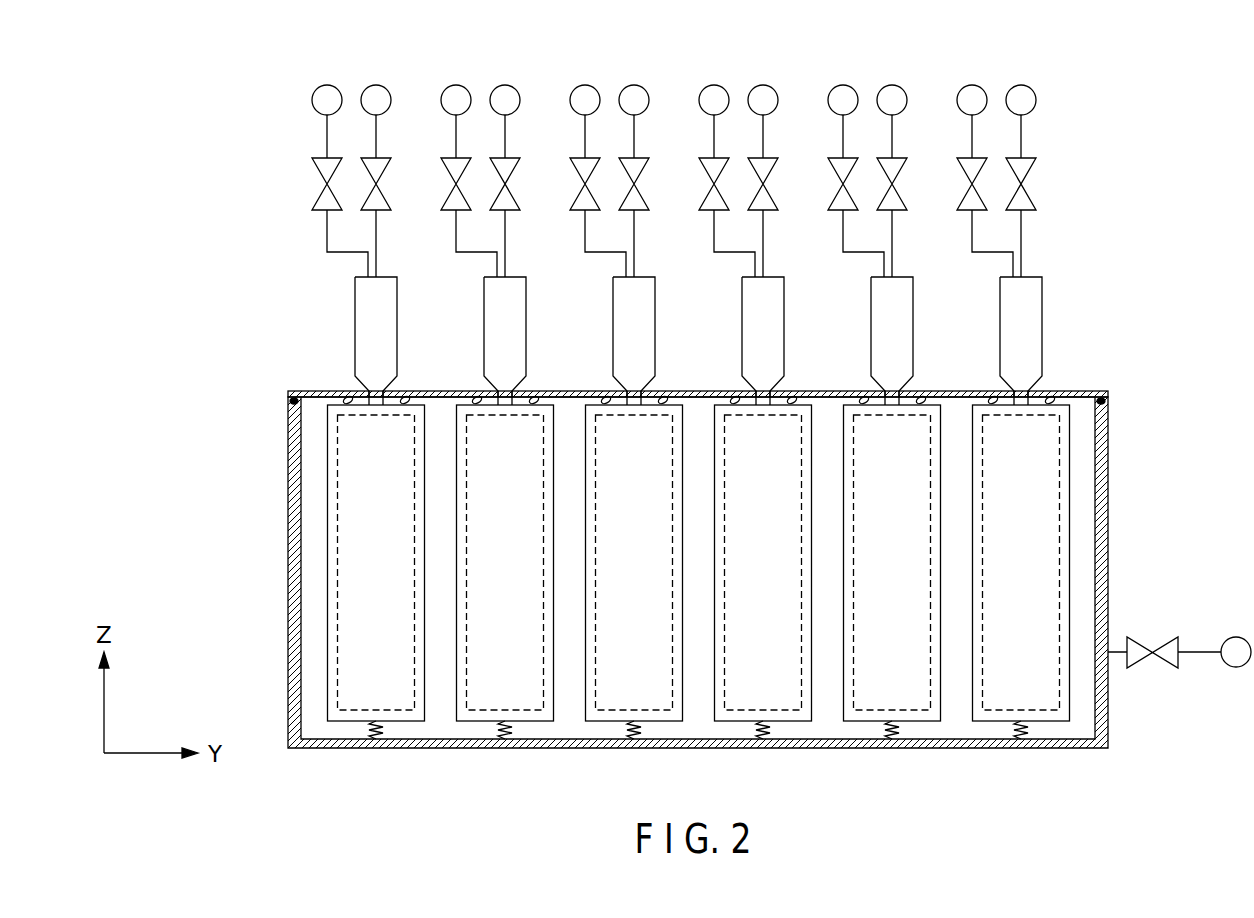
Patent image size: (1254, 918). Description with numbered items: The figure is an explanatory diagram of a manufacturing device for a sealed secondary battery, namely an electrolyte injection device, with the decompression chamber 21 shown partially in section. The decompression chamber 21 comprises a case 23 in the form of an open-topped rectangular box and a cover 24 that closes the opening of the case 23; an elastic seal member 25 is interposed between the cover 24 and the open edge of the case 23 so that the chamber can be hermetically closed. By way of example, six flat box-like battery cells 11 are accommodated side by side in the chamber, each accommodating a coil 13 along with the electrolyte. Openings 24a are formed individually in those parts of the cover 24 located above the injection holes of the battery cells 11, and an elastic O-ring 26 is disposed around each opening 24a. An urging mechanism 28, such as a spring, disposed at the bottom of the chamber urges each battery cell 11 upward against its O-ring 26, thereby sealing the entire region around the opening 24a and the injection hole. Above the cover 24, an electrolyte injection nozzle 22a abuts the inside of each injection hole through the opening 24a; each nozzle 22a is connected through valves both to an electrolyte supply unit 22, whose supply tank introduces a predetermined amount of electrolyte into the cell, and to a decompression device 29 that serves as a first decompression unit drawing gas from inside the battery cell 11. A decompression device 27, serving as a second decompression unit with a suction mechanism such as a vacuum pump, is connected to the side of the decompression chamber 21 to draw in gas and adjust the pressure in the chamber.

The battery cell 11 is at (425, 571).
The coil 13 is at (337, 503).
The decompression chamber 21 is at (654, 546).
The electrolyte supply unit 22 is at (330, 87).
The electrolyte injection nozzle 22a is at (360, 388).
The case 23 is at (649, 572).
The cover 24 is at (677, 377).
The opening 24a is at (388, 388).
The elastic seal member 25 is at (311, 391).
The O-ring 26 is at (410, 396).
The decompression device 27 is at (1236, 667).
The urging mechanism 28 is at (368, 728).
The decompression device 29 is at (380, 87).